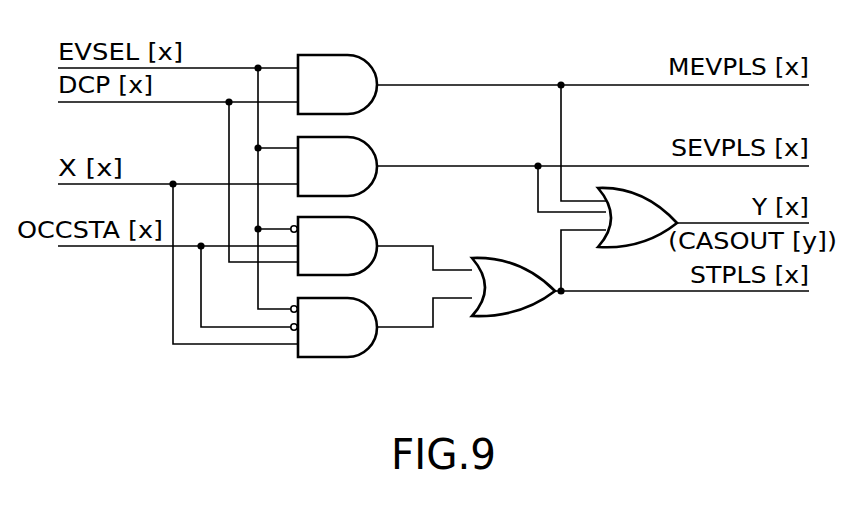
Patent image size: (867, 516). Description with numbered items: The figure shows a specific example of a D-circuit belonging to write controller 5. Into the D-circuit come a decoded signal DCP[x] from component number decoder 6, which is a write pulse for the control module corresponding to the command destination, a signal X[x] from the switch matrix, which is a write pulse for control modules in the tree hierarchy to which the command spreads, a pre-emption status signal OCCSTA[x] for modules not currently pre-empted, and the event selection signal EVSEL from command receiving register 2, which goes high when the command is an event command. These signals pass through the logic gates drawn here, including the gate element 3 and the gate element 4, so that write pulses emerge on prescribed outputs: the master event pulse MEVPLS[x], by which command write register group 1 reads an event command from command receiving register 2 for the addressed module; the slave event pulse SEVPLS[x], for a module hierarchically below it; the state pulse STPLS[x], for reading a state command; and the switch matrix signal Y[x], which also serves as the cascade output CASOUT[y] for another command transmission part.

The command write register group 1 is at (337, 84).
The command receiving register 2 is at (337, 166).
The third AND gate with inverted input (EVSEL*, OCCSTA, DCP) 3 is at (334, 246).
The fourth AND gate with inverted inputs (EVSEL*, OCCSTA*, X) 4 is at (334, 327).
The write controller 5 is at (513, 287).
The component number decoder 6 is at (637, 217).